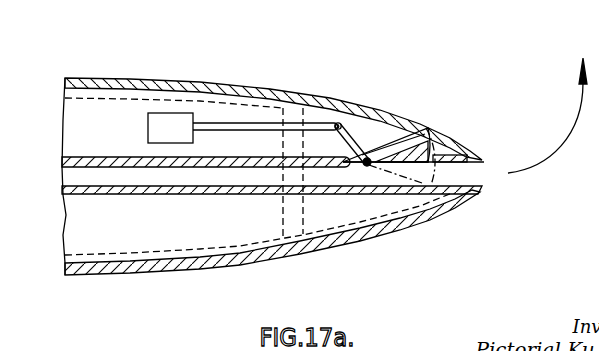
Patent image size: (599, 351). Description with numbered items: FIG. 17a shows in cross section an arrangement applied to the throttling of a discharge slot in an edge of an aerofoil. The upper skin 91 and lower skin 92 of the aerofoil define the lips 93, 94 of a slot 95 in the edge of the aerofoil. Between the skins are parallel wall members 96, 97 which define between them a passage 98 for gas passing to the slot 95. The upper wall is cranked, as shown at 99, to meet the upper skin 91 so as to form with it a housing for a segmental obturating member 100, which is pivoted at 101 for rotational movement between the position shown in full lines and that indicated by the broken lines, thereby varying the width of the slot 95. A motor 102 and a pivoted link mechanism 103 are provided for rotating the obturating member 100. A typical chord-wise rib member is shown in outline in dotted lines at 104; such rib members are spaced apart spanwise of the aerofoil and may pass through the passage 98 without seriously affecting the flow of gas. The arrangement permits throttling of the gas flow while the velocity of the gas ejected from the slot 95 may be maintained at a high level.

The upper skin 91 is at (328, 99).
The lower skin 92 is at (292, 255).
The lip 93 is at (483, 160).
The lip 94 is at (480, 186).
The slot 95 is at (480, 172).
The wall member 96 is at (259, 157).
The wall member 97 is at (208, 195).
The passage 98 is at (123, 178).
The cranked portion of upper wall 99 is at (350, 138).
The segmental obturating member 100 is at (415, 150).
The pivot 101 is at (368, 158).
The motor 102 is at (177, 123).
The pivoted link mechanism 103 is at (247, 125).
The chord-wise rib member 104 is at (142, 97).